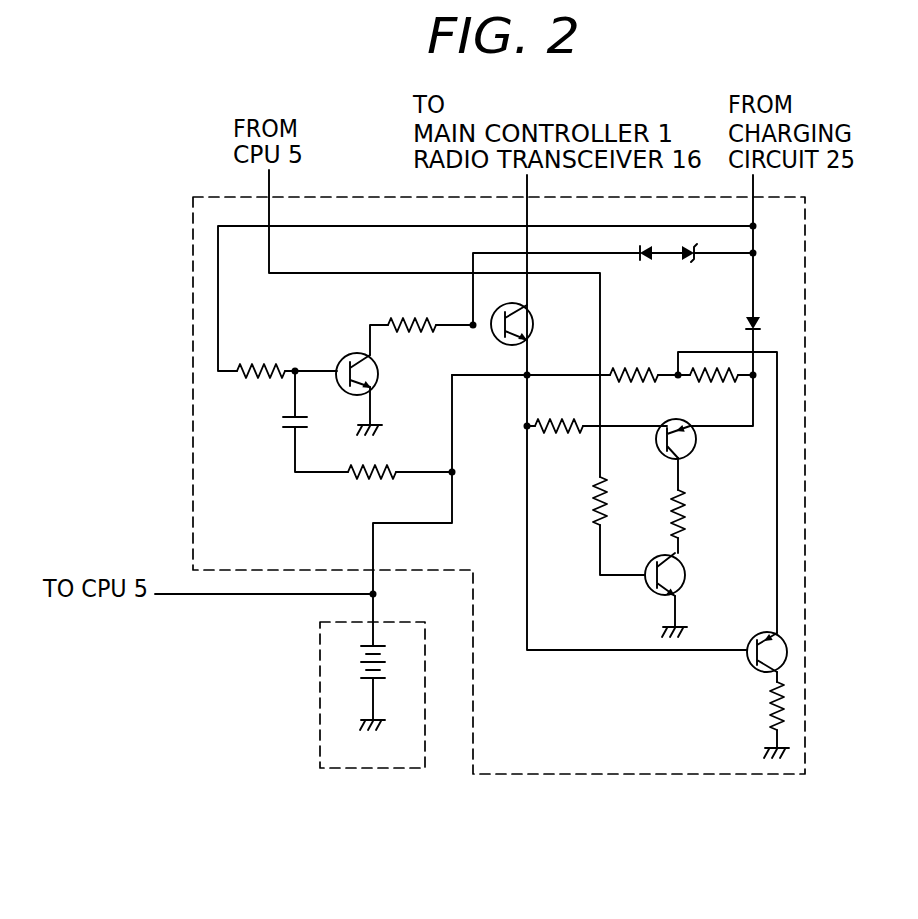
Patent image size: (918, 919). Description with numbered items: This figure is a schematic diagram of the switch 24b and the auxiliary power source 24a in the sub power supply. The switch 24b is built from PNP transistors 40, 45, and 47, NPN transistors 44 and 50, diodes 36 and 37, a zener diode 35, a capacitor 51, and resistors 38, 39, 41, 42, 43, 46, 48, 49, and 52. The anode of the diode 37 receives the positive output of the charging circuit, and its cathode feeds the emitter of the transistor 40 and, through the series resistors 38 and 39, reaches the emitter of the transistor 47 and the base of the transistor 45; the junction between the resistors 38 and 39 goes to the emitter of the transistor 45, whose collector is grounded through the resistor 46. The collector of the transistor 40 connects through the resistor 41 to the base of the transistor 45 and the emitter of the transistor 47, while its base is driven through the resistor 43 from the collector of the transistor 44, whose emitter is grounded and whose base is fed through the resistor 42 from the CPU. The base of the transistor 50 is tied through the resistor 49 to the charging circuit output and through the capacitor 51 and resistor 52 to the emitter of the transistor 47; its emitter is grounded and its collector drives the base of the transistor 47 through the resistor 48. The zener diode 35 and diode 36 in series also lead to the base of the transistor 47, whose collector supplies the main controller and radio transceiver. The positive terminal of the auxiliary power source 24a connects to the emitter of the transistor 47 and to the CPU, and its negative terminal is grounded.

The auxiliary power source 24a is at (320, 682).
The switch 24b is at (193, 377).
The zener diode 35 is at (691, 262).
The diode 36 is at (647, 261).
The diode 37 is at (760, 322).
The resistor 38 is at (722, 381).
The resistor 39 is at (636, 368).
The PNP transistor 40 is at (698, 445).
The resistor 41 is at (557, 435).
The resistor 42 is at (592, 505).
The resistor 43 is at (690, 522).
The NPN transistor 44 is at (688, 577).
The PNP transistor 45 is at (758, 671).
The resistor 46 is at (771, 706).
The PNP transistor 47 is at (535, 328).
The resistor 48 is at (409, 331).
The resistor 49 is at (262, 369).
The NPN transistor 50 is at (345, 358).
The capacitor 51 is at (283, 422).
The resistor 52 is at (360, 484).